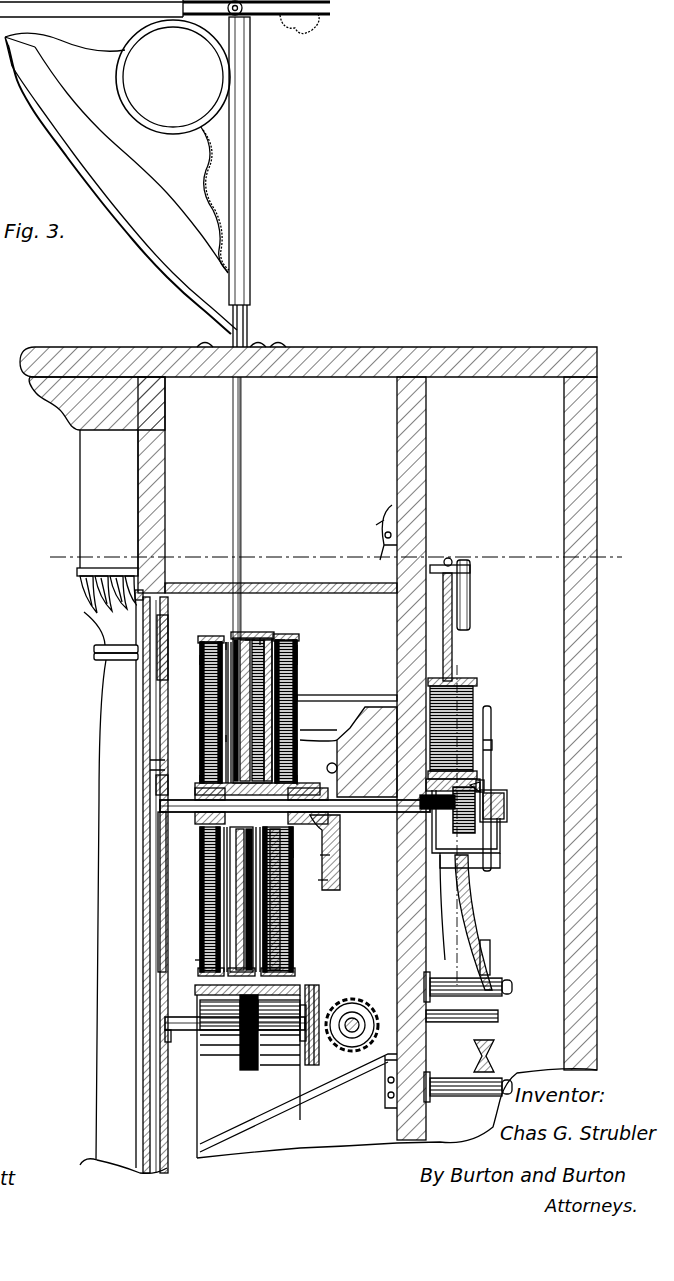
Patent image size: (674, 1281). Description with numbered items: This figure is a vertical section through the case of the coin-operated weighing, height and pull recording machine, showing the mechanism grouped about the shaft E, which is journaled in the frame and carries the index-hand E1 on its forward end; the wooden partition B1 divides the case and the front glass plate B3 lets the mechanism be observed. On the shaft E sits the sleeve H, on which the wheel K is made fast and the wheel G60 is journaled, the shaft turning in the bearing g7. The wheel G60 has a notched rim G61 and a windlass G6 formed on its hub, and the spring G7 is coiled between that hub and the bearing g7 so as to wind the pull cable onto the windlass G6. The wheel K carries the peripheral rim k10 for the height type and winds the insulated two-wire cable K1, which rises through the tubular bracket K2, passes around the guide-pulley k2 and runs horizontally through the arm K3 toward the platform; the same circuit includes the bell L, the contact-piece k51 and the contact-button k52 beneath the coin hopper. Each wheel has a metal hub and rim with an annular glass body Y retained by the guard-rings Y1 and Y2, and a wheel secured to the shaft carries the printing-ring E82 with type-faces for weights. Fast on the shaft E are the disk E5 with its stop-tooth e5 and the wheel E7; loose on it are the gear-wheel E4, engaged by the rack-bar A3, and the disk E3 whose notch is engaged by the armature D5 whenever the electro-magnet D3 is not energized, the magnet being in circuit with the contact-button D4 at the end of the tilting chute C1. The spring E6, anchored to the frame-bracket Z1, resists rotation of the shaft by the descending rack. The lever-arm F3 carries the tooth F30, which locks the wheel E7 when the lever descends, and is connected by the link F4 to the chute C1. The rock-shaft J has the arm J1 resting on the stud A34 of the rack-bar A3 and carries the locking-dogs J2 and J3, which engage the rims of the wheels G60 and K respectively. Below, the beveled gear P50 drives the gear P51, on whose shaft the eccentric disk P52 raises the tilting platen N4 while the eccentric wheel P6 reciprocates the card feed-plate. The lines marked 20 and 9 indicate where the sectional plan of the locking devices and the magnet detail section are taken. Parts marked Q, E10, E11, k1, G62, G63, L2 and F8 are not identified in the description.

The arm K3 is at (88, 5).
The guide-pulley k2 is at (245, 22).
The tubular bracket K2 is at (252, 195).
The insulated wire cable K1 is at (241, 420).
The glass plate B3 is at (143, 698).
The wooden partition B1 is at (420, 454).
The section line 20- 20 is at (336, 547).
The rock-shaft J is at (347, 688).
The bell L is at (388, 512).
The wheel K is at (128, 975).
The shaft E is at (295, 822).
The index-hand E1 is at (156, 820).
The armature D5 is at (410, 782).
The spring E6 is at (328, 865).
The base plate E11 is at (195, 988).
The plate E10 is at (200, 965).
The tilting platen or bed N4 is at (195, 1004).
The housing block Q is at (248, 1076).
The disk or cam-wheel P52 is at (258, 1060).
The gear P51 is at (322, 1010).
The beveled gear P50 is at (365, 1008).
The eccentric wheel P6 is at (308, 1010).
The contact-piece k51 is at (184, 1032).
The stud A34 is at (446, 563).
The rack-bar A3 is at (470, 612).
The arm J1 is at (443, 618).
The electro-magnet D3 is at (472, 704).
The section line 9- 9 is at (466, 819).
The lever-arm F3 is at (491, 730).
The tooth F30 is at (492, 745).
The stop-tooth e5 is at (475, 786).
The link F4 is at (484, 786).
The disk E5 is at (500, 798).
The wheel E7 is at (507, 810).
The frame-bracket Z1 is at (505, 835).
The gear-wheel E4 is at (472, 855).
The disk E3 is at (447, 907).
The tilting chute C1 is at (490, 968).
The contact-button D4 is at (458, 985).
The roller k1 is at (494, 1052).
The contact-button k52 is at (458, 1098).
The locking-dog J3 is at (226, 642).
The locking-dog J2 is at (266, 638).
The printing-ring E82 is at (210, 642).
The peripheral rim k10 is at (250, 640).
The notched rim G61 is at (278, 640).
The gear G63 is at (292, 642).
The gear G62 is at (299, 650).
The guard-ring Y2 is at (200, 660).
The wheel G60 is at (300, 746).
The windlass G6 is at (327, 762).
The spring G7 is at (300, 778).
The bracket L2 is at (160, 750).
The annular body Y is at (232, 738).
The guard-ring Y1 is at (210, 778).
The rod F8 is at (200, 896).
The sleeve H is at (325, 860).
The bearing g7 is at (322, 885).